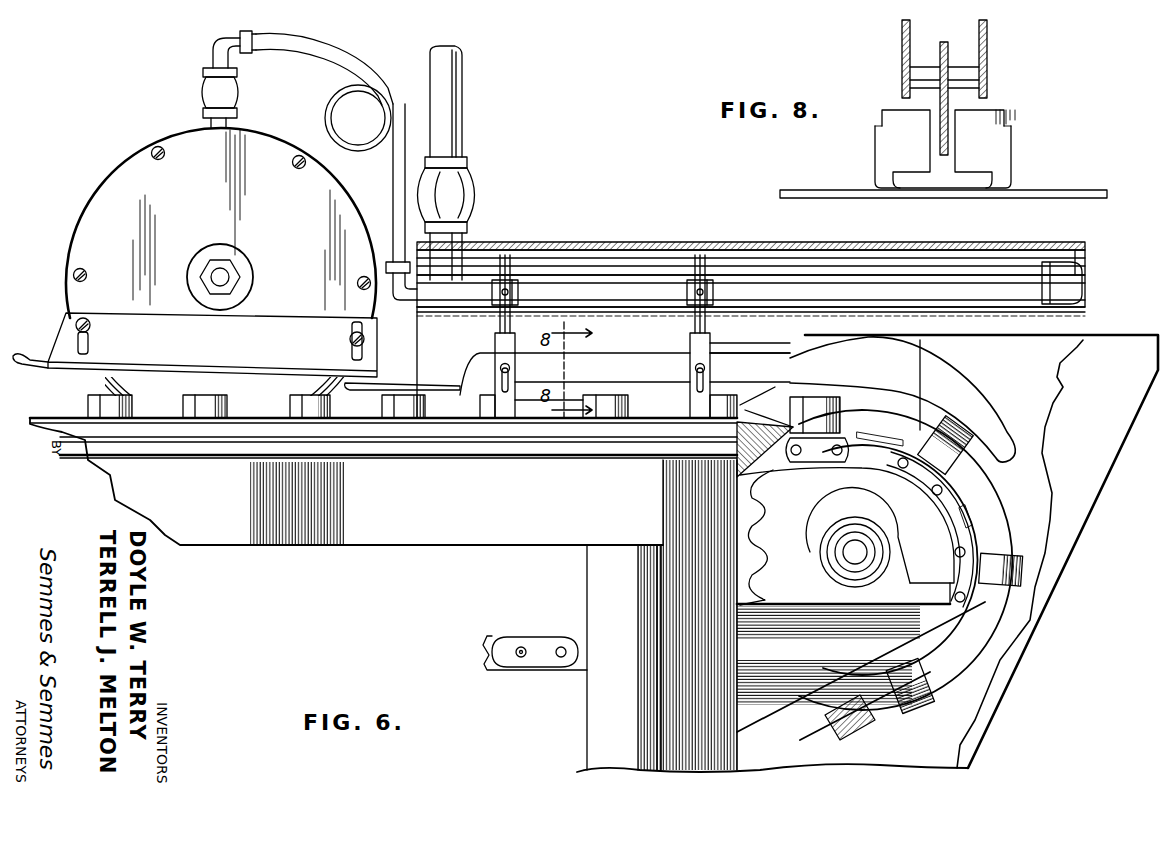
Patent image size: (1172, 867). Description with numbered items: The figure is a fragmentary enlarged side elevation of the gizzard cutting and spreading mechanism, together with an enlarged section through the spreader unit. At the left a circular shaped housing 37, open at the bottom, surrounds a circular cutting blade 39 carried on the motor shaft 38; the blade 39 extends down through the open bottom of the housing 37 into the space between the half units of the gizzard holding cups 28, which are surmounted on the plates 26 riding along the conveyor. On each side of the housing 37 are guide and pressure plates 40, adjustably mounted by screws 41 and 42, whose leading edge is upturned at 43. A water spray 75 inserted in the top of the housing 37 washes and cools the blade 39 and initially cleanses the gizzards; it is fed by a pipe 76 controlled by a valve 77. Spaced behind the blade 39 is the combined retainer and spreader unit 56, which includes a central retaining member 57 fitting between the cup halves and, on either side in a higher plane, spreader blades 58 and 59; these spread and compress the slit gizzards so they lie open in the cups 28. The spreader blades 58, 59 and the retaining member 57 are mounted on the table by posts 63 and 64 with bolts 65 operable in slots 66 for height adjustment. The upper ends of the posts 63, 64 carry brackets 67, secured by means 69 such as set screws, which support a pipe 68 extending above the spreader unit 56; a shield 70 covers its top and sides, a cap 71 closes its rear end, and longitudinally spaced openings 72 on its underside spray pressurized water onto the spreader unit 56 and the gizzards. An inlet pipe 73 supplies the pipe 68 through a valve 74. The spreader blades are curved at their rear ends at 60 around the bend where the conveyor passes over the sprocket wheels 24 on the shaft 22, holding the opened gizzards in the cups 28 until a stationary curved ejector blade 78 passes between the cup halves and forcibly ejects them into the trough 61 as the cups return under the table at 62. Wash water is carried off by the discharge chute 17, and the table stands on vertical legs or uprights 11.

In FIG. 6, the circular shaped housing 37 is at (128, 166).
In FIG. 6, the motor shaft 38 is at (222, 278).
In FIG. 6, the circular cutting blade 39 is at (152, 378).
In FIG. 6, the guide and pressure plates 40 is at (168, 336).
In FIG. 6, the screws 41 is at (350, 337).
In FIG. 6, the screws 42 is at (86, 318).
In FIG. 6, the upturned leading edge 43 is at (32, 420).
In FIG. 6, the water spray 75 is at (212, 130).
In FIG. 6, the valve 77 is at (203, 94).
In FIG. 6, the pipe 76 is at (357, 70).
In FIG. 6, the inlet pipe 73 is at (462, 82).
In FIG. 6, the valve 74 is at (466, 192).
In FIG. 6, the shield 70 is at (640, 250).
In FIG. 6, the pipe 68 is at (788, 258).
In FIG. 6, the openings 72 is at (470, 312).
In FIG. 6, the cap 71 is at (1072, 296).
In FIG. 6, the securing means 69 is at (494, 292).
In FIG. 6, the brackets 67 is at (520, 293).
In FIG. 6, the post 64 is at (494, 338).
In FIG. 6, the bolts 65 is at (706, 368).
In FIG. 6, the slots 66 is at (696, 386).
In FIG. 6, the combined retainer and spreader unit 56 is at (628, 348).
In FIG. 6, the post 63 is at (740, 316).
In FIG. 6, the plates 26 is at (192, 418).
In FIG. 8, the plates 26 is at (1047, 190).
In FIG. 6, the discharge chute 17 is at (600, 592).
In FIG. 6, the vertical legs or uprights 11 is at (670, 650).
In FIG. 6, the return path 62 is at (548, 625).
In FIG. 6, the curved rear ends 60 is at (968, 398).
In FIG. 6, the trough 61 is at (1090, 496).
In FIG. 6, the stationary curved ejector blade 78 is at (985, 535).
In FIG. 6, the gizzard holding cups 28 is at (1000, 572).
In FIG. 6, the sprocket wheels 24 is at (880, 495).
In FIG. 6, the shaft 22 is at (855, 552).
In FIG. 8, the spreader blade 59 is at (900, 44).
In FIG. 8, the spreader blade 58 is at (988, 52).
In FIG. 8, the central retaining member 57 is at (950, 108).